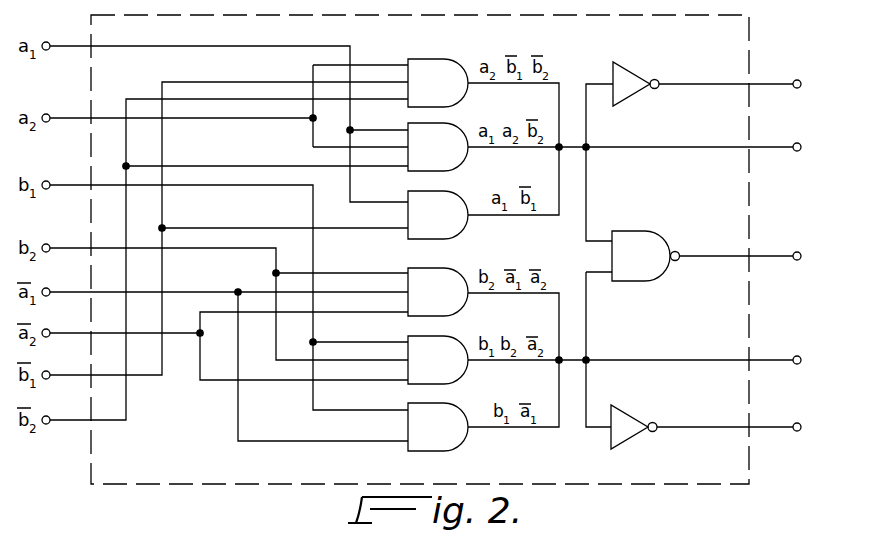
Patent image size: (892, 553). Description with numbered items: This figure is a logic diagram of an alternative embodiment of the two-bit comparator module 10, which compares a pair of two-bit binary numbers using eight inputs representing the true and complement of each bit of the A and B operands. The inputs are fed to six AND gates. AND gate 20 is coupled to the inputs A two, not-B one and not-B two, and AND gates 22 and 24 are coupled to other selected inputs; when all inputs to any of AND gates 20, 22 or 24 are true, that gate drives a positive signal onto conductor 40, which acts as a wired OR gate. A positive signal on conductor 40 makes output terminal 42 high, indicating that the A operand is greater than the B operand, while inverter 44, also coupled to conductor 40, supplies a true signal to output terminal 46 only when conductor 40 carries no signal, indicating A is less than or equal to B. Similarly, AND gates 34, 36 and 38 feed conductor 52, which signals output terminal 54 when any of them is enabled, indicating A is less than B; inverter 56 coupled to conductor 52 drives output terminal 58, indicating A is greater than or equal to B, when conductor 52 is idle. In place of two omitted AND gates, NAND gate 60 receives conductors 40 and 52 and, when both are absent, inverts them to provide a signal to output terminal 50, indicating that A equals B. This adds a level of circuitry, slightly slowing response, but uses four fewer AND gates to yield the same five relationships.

The two-bit comparator module 10 is at (565, 39).
The AND gate 20 is at (447, 92).
The AND gate 22 is at (447, 156).
The AND gate 24 is at (447, 224).
The AND gate 34 is at (447, 301).
The AND gate 36 is at (447, 369).
The AND gate 38 is at (447, 436).
The conductor 40 is at (577, 147).
The output terminal 42 is at (794, 147).
The inverter 44 is at (631, 73).
The output terminal 46 is at (794, 80).
The output terminal 50 is at (795, 252).
The conductor 52 is at (573, 358).
The output terminal 54 is at (794, 356).
The inverter 56 is at (623, 412).
The output terminal 58 is at (794, 422).
The NAND gate 60 is at (649, 265).